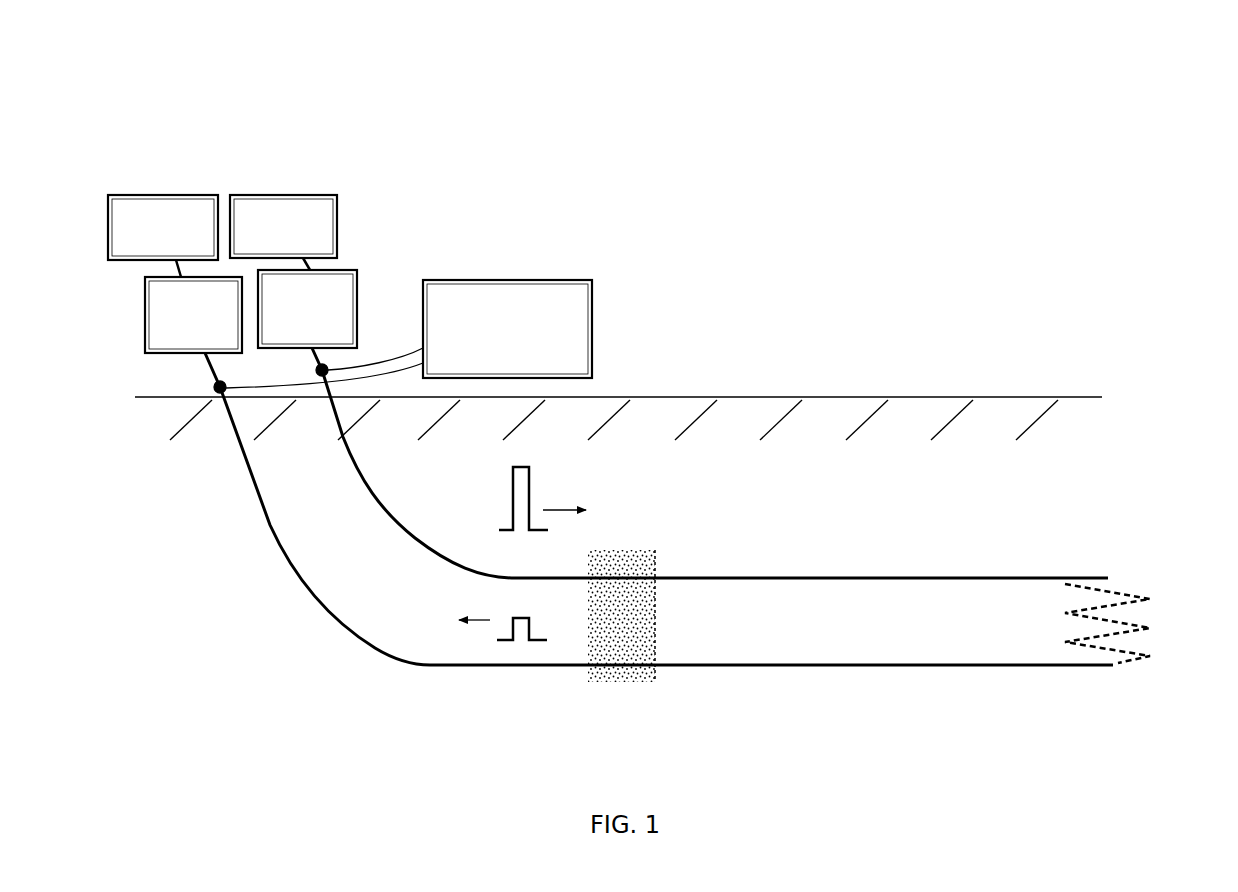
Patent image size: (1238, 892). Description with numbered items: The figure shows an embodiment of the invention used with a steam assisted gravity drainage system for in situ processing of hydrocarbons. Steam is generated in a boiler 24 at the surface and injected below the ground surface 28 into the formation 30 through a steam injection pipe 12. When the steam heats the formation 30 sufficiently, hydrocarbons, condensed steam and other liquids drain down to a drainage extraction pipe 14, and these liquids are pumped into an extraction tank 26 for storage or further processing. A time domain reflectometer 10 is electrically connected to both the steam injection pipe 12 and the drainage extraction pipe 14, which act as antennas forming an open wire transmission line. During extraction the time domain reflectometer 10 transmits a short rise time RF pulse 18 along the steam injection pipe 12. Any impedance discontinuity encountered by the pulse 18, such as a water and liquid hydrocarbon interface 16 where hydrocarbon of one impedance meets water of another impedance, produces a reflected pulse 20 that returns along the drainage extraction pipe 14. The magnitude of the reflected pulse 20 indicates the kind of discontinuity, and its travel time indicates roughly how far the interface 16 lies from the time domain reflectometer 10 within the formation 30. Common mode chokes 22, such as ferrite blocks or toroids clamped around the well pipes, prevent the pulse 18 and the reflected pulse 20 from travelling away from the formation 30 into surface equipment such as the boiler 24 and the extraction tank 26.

The time domain reflectometer 10 is at (530, 280).
The steam injection pipe 12 is at (710, 463).
The drainage extraction pipe 14 is at (659, 509).
The water and liquid hydrocarbon interface 16 is at (658, 595).
The pulse 18 is at (551, 497).
The reflected pulse 20 is at (521, 614).
The common mode choke 22 is at (145, 310).
The boiler 24 is at (278, 195).
The extraction tank 26 is at (163, 195).
The ground surface 28 is at (618, 396).
The formation 30 is at (1102, 616).